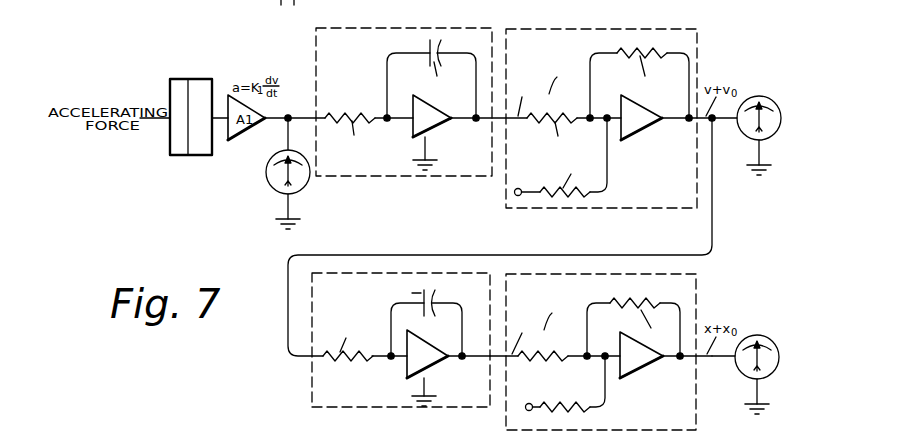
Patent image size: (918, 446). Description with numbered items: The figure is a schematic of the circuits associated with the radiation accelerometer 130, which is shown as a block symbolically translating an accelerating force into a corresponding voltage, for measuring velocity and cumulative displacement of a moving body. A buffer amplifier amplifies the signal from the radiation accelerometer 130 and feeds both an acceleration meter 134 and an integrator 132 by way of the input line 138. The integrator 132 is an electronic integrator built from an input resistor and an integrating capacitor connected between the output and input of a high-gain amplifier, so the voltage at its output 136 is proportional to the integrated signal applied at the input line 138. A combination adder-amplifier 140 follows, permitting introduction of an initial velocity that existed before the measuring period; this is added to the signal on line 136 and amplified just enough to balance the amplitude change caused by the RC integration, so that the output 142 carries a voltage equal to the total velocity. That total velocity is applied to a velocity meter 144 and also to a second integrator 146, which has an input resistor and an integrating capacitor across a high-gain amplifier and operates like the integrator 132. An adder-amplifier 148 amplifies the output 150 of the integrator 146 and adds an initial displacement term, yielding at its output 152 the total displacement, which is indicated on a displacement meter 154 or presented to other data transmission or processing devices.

The radiation accelerometer 130 is at (188, 155).
The integrator 132 is at (452, 28).
The acceleration meter 134 is at (267, 166).
The output of integrator 136 is at (466, 122).
The input line 138 is at (289, 114).
The adder-amplifier 140 is at (672, 28).
The output of adder-amplifier 142 is at (723, 122).
The velocity meter 144 is at (781, 108).
The integrator 146 is at (311, 376).
The adder-amplifier 148 is at (696, 283).
The output of integrator 150 is at (475, 360).
The output of adder-amplifier 152 is at (714, 358).
The displacement meter 154 is at (773, 343).